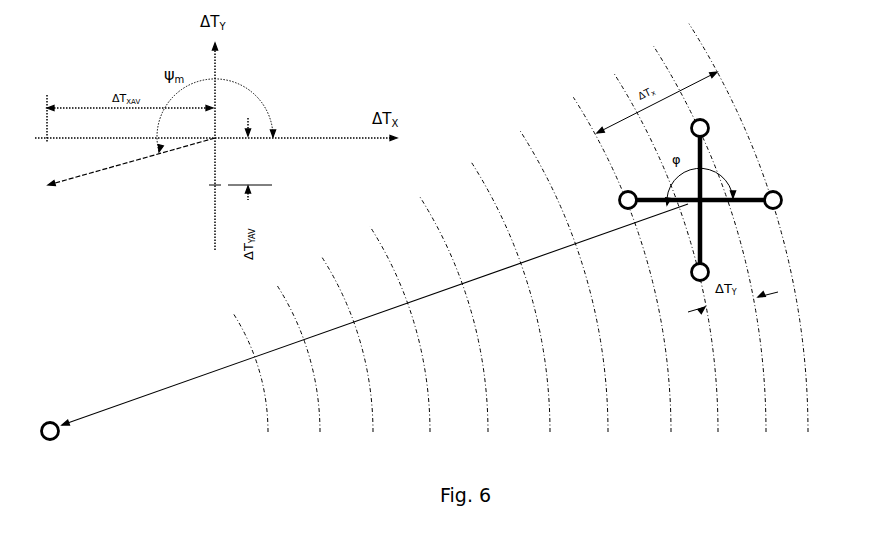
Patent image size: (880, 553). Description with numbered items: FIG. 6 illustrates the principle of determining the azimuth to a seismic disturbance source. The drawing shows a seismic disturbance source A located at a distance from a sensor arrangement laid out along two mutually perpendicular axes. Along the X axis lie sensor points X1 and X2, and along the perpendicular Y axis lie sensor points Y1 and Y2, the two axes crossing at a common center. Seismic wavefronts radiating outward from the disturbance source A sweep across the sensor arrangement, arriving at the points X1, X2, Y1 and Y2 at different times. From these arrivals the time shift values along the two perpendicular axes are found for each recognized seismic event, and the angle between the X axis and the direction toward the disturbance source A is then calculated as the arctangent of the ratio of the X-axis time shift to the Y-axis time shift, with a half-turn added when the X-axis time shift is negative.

The sound source A is at (53, 418).
The first x-axis microphone X1 is at (775, 214).
The second x-axis microphone X2 is at (626, 185).
The first y-axis microphone Y1 is at (707, 115).
The second y-axis microphone Y2 is at (715, 268).